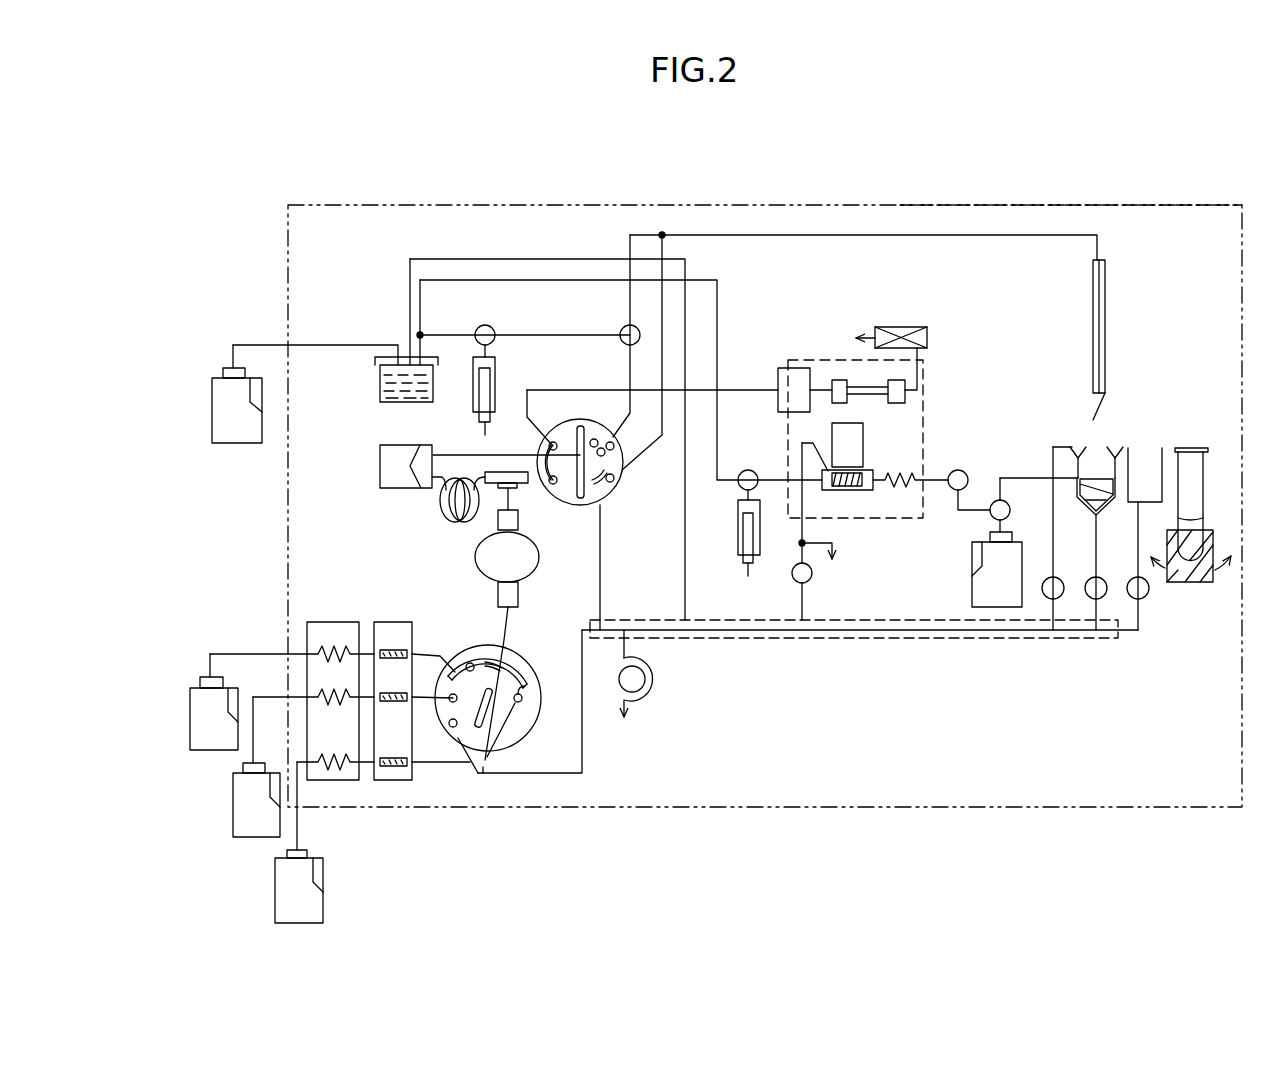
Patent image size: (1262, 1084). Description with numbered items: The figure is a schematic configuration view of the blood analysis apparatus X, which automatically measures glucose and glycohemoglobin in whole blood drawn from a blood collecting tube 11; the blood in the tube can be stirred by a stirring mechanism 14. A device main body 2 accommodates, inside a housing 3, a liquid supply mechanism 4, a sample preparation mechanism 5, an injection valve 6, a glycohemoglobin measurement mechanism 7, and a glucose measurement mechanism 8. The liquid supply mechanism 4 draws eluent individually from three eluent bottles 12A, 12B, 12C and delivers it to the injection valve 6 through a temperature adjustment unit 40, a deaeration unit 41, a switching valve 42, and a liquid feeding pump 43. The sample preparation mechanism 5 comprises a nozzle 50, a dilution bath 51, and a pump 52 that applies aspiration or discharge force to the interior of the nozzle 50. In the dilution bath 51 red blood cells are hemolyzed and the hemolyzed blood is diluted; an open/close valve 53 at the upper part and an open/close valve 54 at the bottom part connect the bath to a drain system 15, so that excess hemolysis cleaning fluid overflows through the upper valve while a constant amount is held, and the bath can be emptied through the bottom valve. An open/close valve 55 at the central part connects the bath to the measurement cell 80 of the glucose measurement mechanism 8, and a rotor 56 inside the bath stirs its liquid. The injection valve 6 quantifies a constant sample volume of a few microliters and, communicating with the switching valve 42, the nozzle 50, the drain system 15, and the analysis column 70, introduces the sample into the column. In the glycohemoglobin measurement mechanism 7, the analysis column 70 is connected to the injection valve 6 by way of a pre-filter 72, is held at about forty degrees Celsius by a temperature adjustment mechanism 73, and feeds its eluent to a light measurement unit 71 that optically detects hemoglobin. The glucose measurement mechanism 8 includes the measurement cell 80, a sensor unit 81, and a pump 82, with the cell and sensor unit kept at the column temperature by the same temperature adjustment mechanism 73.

The blood analysis apparatus X is at (836, 157).
The device main body 2 is at (641, 204).
The housing 3 is at (913, 205).
The liquid supply mechanism 4 is at (450, 629).
The sample preparation mechanism 5 is at (1138, 393).
The injection valve 6 is at (613, 492).
The glycohemoglobin measurement mechanism 7 is at (938, 380).
The glucose measurement mechanism 8 is at (884, 498).
The blood collecting tube 11 is at (1195, 485).
The eluent bottle 12A is at (190, 710).
The eluent bottle 12B is at (233, 803).
The eluent bottle 12C is at (275, 893).
The stirring mechanism 14 is at (1197, 582).
The drain system 15 is at (813, 640).
The temperature adjustment unit 40 is at (327, 622).
The deaeration unit 41 is at (387, 622).
The switching valve 42 is at (530, 674).
The liquid feeding pump 43 is at (540, 557).
The nozzle 50 is at (1093, 338).
The dilution bath 51 is at (1113, 450).
The pump 52 is at (496, 384).
The open/close valve 53 is at (1079, 447).
The open/close valve 54 is at (1093, 515).
The open/close valve 55 is at (1070, 476).
The rotor 56 is at (1100, 494).
The analysis column 70 is at (862, 385).
The light measurement unit 71 is at (897, 327).
The pre-filter 72 is at (778, 378).
The temperature adjustment mechanism 73 is at (923, 432).
The measurement cell 80 is at (860, 490).
The sensor unit 81 is at (862, 470).
The pump 82 is at (738, 537).